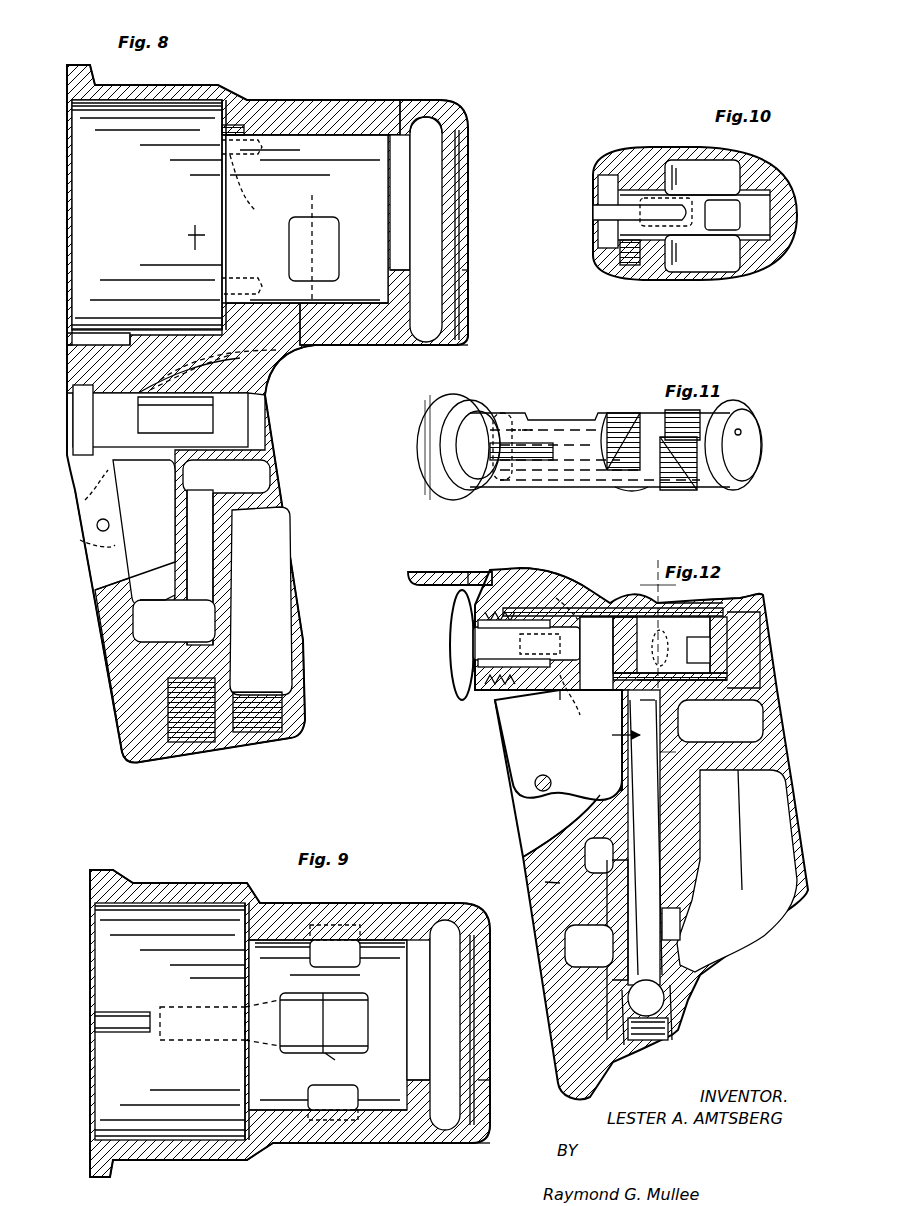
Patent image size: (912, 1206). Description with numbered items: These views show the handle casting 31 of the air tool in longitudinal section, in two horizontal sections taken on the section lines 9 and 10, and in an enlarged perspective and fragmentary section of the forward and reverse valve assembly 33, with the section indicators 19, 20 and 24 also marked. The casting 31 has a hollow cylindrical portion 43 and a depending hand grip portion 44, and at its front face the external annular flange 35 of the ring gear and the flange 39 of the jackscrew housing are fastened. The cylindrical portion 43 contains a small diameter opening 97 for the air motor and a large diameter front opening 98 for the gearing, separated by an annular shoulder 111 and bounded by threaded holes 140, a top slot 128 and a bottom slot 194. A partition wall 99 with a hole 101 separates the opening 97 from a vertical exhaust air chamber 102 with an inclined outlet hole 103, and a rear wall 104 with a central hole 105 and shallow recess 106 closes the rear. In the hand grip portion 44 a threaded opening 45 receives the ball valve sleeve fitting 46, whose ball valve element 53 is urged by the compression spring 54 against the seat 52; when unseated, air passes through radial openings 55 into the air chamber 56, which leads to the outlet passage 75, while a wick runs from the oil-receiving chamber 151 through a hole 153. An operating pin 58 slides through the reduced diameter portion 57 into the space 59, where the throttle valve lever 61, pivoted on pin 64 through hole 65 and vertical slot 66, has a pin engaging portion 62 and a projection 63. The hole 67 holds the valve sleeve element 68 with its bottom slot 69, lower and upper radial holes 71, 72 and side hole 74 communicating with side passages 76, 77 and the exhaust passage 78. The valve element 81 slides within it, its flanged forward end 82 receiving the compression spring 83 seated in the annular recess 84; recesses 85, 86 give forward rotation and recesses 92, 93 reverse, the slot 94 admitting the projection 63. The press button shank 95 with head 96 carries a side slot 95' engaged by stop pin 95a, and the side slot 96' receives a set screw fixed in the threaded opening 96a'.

In FIG. 8, the section line 9— 9 is at (60, 215).
In FIG. 8, the section line 10— 10 is at (60, 418).
In FIG. 8, the section line 19- 19 is at (192, 232).
In FIG. 8, the section line 20- 20 is at (293, 203).
In FIG. 12, the axis line 24 is at (669, 669).
In FIG. 8, the handle casting 31 is at (278, 448).
In FIG. 9, the handle casting 31 is at (294, 900).
In FIG. 10, the handle casting 31 is at (777, 258).
In FIG. 12, the handle casting 31 is at (783, 717).
In FIG. 12, the forward and reverse valve assembly 33 is at (447, 640).
In FIG. 12, the external annular flange 35 is at (470, 572).
In FIG. 12, the flange 39 is at (428, 572).
In FIG. 8, the hollow cylindrical portion 43 is at (300, 102).
In FIG. 9, the hollow cylindrical portion 43 is at (300, 1130).
In FIG. 8, the hand grip portion 44 is at (295, 590).
In FIG. 10, the hand grip portion 44 is at (680, 282).
In FIG. 12, the hand grip portion 44 is at (560, 883).
In FIG. 8, the threaded opening 45 is at (193, 725).
In FIG. 12, the threaded opening 45 is at (628, 1045).
In FIG. 12, the ball valve sleeve fitting 46 is at (680, 1028).
In FIG. 12, the ball valve seat 52 is at (620, 975).
In FIG. 12, the ball valve element 53 is at (662, 985).
In FIG. 12, the compression spring 54 is at (648, 1040).
In FIG. 12, the radial openings 55 is at (612, 942).
In FIG. 8, the air chamber 56 is at (190, 659).
In FIG. 9, the air chamber 56 is at (352, 1035).
In FIG. 12, the air chamber 56 is at (690, 737).
In FIG. 12, the reduced diameter portion 57 is at (600, 855).
In FIG. 12, the operating pin 58 is at (600, 895).
In FIG. 8, the space 59 is at (158, 538).
In FIG. 12, the space 59 is at (540, 812).
In FIG. 12, the throttle valve lever 61 is at (542, 750).
In FIG. 12, the pin engaging portion 62 is at (645, 800).
In FIG. 12, the upwardly-extending projection 63 is at (590, 665).
In FIG. 12, the pin 64 is at (535, 783).
In FIG. 8, the hole 65 is at (100, 530).
In FIG. 8, the vertical slot 66 is at (90, 487).
In FIG. 10, the vertical slot 66 is at (605, 212).
In FIG. 12, the vertical slot 66 is at (500, 712).
In FIG. 8, the hole 67 is at (115, 417).
In FIG. 10, the hole 67 is at (622, 228).
In FIG. 12, the hole 67 is at (582, 600).
In FIG. 11, the valve sleeve element 68 is at (725, 488).
In FIG. 12, the valve sleeve element 68 is at (600, 612).
In FIG. 12, the elongated bottom slot 69 is at (560, 665).
In FIG. 12, the lower radial hole 71 is at (661, 712).
In FIG. 12, the upper radial hole 72 is at (678, 605).
In FIG. 12, the radial side hole 74 is at (698, 650).
In FIG. 8, the outlet passage 75 is at (206, 458).
In FIG. 10, the outlet passage 75 is at (735, 215).
In FIG. 12, the outlet passage 75 is at (705, 705).
In FIG. 9, the side passage 76 is at (355, 1095).
In FIG. 10, the side passage 76 is at (716, 258).
In FIG. 8, the side passage 77 is at (325, 267).
In FIG. 9, the side passage 77 is at (345, 957).
In FIG. 10, the side passage 77 is at (708, 172).
In FIG. 8, the exhaust passage 78 is at (186, 366).
In FIG. 9, the exhaust passage 78 is at (330, 1055).
In FIG. 12, the exhaust passage 78 is at (658, 600).
In FIG. 11, the forward and reverse valve element 81 is at (505, 410).
In FIG. 12, the forward and reverse valve element 81 is at (532, 622).
In FIG. 11, the flanged forward end 82 is at (428, 480).
In FIG. 12, the flanged forward end 82 is at (470, 690).
In FIG. 12, the compression spring 83 is at (498, 606).
In FIG. 8, the annular recess 84 is at (80, 402).
In FIG. 10, the annular recess 84 is at (605, 183).
In FIG. 11, the recess 85 is at (692, 420).
In FIG. 12, the recess 85 is at (735, 628).
In FIG. 11, the recess 86 is at (682, 483).
In FIG. 12, the recess 86 is at (732, 672).
In FIG. 11, the recess 92 is at (626, 425).
In FIG. 12, the recess 92 is at (661, 690).
In FIG. 11, the recess 93 is at (635, 490).
In FIG. 12, the recess 93 is at (712, 597).
In FIG. 11, the elongated slot 94 is at (545, 415).
In FIG. 12, the elongated slot 94 is at (585, 598).
In FIG. 12, the press button shank 95 is at (526, 643).
In FIG. 11, the stop pin 95a is at (539, 430).
In FIG. 12, the stop pin 95a is at (558, 596).
In FIG. 12, the elongated side slot 95' is at (580, 700).
In FIG. 12, the press button head 96 is at (435, 648).
In FIG. 11, the elongated side slot 96' is at (521, 479).
In FIG. 10, the threaded opening 96a' is at (620, 276).
In FIG. 8, the small diameter opening 97 is at (260, 243).
In FIG. 9, the small diameter opening 97 is at (292, 1088).
In FIG. 8, the large diameter front opening 98 is at (135, 195).
In FIG. 9, the large diameter front opening 98 is at (140, 1081).
In FIG. 8, the partition wall 99 is at (390, 280).
In FIG. 9, the partition wall 99 is at (418, 1100).
In FIG. 8, the hole 101 is at (395, 222).
In FIG. 9, the hole 101 is at (412, 1040).
In FIG. 8, the exhaust air chamber 102 is at (442, 249).
In FIG. 9, the exhaust air chamber 102 is at (460, 1046).
In FIG. 8, the exhaust air outlet hole 103 is at (415, 118).
In FIG. 8, the rear wall 104 is at (450, 322).
In FIG. 9, the rear wall 104 is at (470, 1100).
In FIG. 8, the central hole 105 is at (452, 232).
In FIG. 9, the central hole 105 is at (470, 1037).
In FIG. 8, the shallow recess 106 is at (463, 278).
In FIG. 9, the shallow recess 106 is at (485, 1083).
In FIG. 8, the annular shoulder 111 is at (220, 192).
In FIG. 9, the annular shoulder 111 is at (245, 967).
In FIG. 8, the slot 128 is at (240, 125).
In FIG. 8, the threaded holes 140 is at (242, 217).
In FIG. 12, the oil-receiving chamber 151 is at (760, 881).
In FIG. 12, the hole 153 is at (738, 778).
In FIG. 8, the slot 194 is at (85, 343).
In FIG. 9, the slot 194 is at (100, 1030).